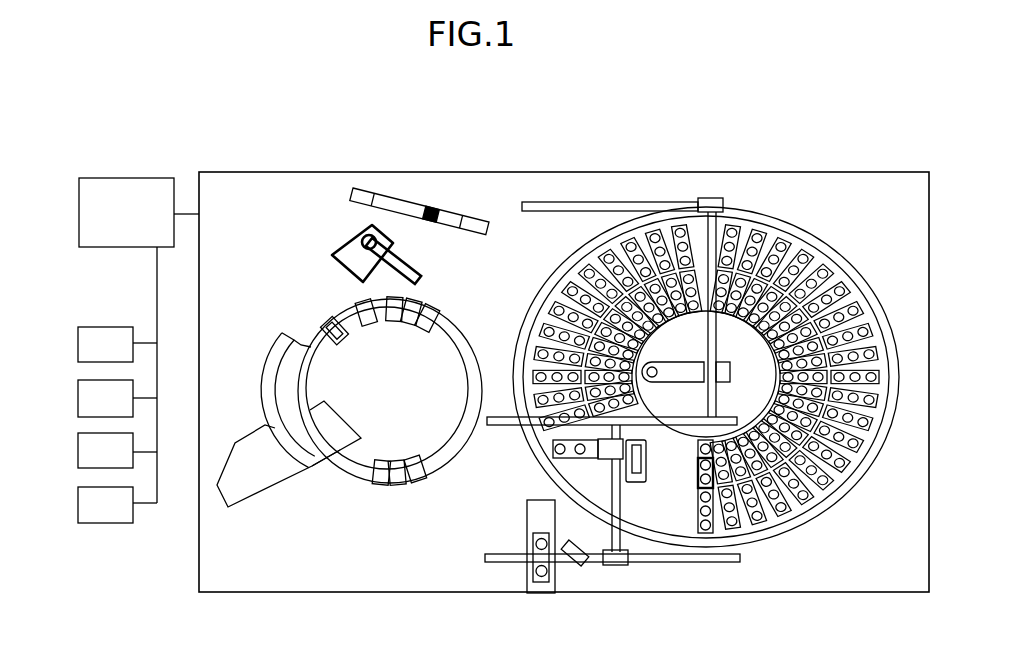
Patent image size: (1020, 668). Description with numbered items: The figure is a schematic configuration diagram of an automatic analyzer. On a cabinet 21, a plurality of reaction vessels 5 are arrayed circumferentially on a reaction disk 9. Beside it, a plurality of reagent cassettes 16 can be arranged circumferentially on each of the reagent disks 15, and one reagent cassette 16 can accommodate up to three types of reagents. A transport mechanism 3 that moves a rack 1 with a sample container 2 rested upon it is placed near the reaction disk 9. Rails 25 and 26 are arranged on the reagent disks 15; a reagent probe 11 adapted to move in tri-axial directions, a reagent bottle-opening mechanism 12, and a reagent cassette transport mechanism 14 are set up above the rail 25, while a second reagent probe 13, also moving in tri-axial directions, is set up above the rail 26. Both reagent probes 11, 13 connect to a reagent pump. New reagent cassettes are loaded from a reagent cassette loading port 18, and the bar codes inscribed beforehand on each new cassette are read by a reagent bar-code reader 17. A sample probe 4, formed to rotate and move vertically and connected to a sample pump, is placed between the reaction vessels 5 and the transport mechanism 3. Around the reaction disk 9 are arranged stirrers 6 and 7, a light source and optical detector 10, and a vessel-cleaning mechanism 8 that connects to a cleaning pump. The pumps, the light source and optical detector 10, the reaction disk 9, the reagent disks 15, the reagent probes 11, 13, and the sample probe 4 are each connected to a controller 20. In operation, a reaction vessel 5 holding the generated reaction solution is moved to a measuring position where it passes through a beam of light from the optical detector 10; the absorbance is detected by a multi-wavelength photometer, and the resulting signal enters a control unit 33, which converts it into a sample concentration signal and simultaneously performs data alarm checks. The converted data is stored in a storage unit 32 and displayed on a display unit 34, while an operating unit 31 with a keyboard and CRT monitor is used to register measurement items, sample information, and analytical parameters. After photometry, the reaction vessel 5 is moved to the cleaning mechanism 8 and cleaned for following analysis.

The rack 1 is at (397, 200).
The sample container 2 is at (437, 208).
The transport mechanism 3 is at (467, 217).
The sample probe 4 is at (405, 267).
The reaction vessel 5 is at (438, 312).
The stirrer 6 is at (313, 310).
The stirrer 7 is at (355, 296).
The vessel-cleaning mechanism 8 is at (277, 348).
The reaction disk 9 is at (450, 336).
The light source and optical detector 10 is at (343, 425).
The reagent probe 11 is at (553, 447).
The reagent bottle-opening mechanism 12 is at (600, 448).
The reagent probe 13 is at (682, 351).
The reagent cassette transport mechanism 14 is at (646, 475).
The reagent disk 15 is at (855, 495).
The reagent cassette 16 is at (757, 515).
The reagent bar-code reader 17 is at (585, 560).
The reagent cassette loading port 18 is at (538, 590).
The controller 20 is at (127, 178).
The cabinet 21 is at (305, 592).
The rail 25 is at (642, 558).
The rail 26 is at (726, 374).
The operating unit 31 is at (78, 343).
The storage unit 32 is at (78, 397).
The control unit 33 is at (78, 451).
The display unit 34 is at (78, 504).